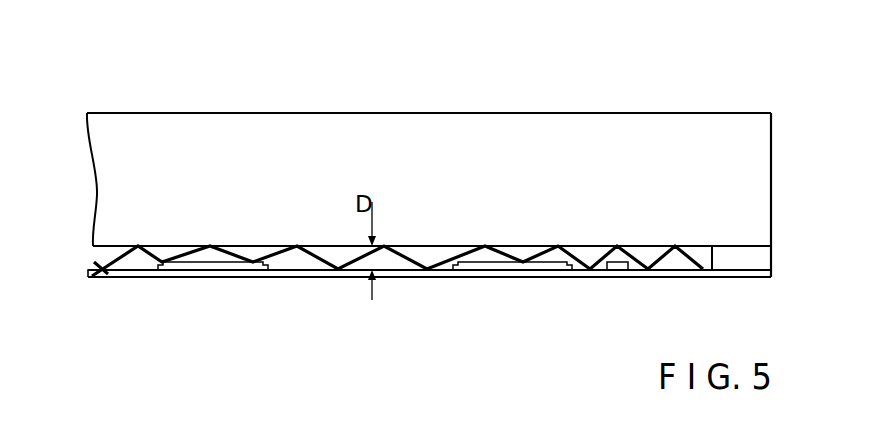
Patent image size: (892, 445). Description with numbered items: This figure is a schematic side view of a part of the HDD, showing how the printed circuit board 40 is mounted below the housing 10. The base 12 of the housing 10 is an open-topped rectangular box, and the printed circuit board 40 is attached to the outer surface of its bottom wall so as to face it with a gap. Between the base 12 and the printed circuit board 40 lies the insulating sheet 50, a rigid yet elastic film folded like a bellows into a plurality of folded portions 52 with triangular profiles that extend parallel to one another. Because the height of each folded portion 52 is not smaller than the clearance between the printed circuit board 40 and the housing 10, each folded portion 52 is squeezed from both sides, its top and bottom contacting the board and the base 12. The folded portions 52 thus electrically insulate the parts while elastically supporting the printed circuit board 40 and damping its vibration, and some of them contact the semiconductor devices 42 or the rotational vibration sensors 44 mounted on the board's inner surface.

The housing 10 is at (218, 108).
The base 12 is at (350, 125).
The printed circuit board 40 is at (287, 279).
The semiconductor devices 42 is at (208, 266).
The rotational vibration sensors 44 is at (615, 271).
The insulating sheet 50 is at (419, 254).
The folded portions 52 is at (297, 246).